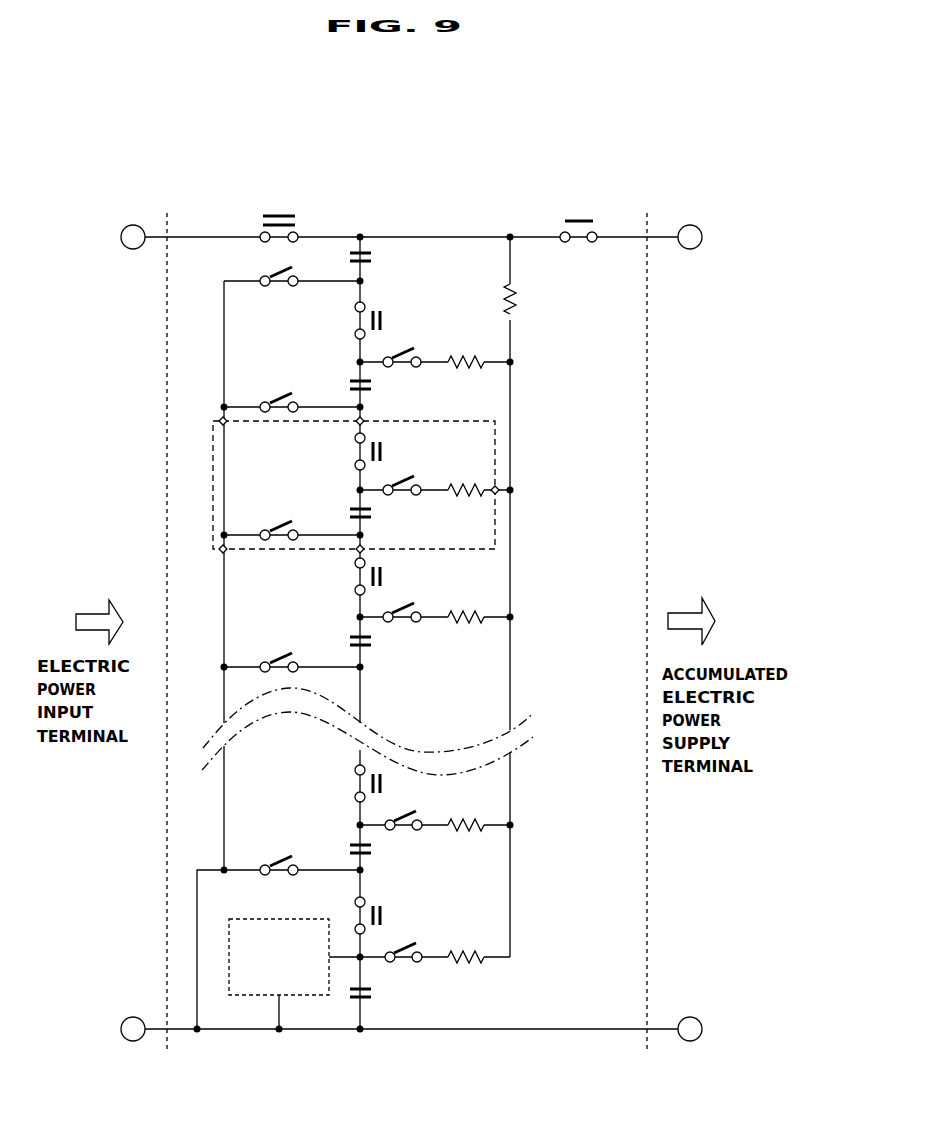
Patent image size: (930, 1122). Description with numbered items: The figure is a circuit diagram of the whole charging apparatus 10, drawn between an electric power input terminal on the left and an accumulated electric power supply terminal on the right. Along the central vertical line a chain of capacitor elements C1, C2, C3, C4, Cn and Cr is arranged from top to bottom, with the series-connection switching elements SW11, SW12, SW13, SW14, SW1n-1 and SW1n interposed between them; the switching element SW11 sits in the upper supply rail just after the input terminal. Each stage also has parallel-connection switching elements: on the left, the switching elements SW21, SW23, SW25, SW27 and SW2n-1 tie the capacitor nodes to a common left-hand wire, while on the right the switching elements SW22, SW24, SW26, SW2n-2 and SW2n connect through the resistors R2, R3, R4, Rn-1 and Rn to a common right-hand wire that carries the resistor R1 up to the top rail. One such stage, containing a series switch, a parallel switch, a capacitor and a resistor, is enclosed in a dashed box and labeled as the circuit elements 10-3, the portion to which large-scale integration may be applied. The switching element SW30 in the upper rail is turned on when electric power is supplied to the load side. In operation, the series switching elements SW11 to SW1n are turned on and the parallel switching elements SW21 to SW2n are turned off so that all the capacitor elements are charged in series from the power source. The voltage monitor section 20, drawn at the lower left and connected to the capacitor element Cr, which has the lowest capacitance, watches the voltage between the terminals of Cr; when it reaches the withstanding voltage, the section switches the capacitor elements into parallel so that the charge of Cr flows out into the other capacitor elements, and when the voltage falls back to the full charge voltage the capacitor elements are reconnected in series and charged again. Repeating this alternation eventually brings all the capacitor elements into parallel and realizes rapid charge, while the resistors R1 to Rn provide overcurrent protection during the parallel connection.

The charging apparatus 10 is at (420, 146).
The circuit elements 10-3 is at (497, 423).
The voltage monitor section 20 is at (294, 974).
The switching element SW11 is at (281, 210).
The switching element SW30 is at (576, 214).
The switching element SW12 is at (383, 307).
The switching element SW13 is at (356, 446).
The switching element SW14 is at (356, 571).
The switching element SW1n-1 is at (356, 780).
The switching element SW1n is at (356, 905).
The switching element SW21 is at (278, 287).
The switching element SW22 is at (400, 368).
The switching element SW23 is at (276, 398).
The switching element SW24 is at (400, 483).
The switching element SW25 is at (275, 525).
The switching element SW26 is at (400, 610).
The switching element SW27 is at (275, 657).
The switching element SW2n-1 is at (275, 860).
The switching element SW2n-2 is at (400, 832).
The switching element SW2n is at (405, 947).
The capacitor element C1 is at (374, 260).
The capacitor element C2 is at (343, 388).
The capacitor element C3 is at (343, 518).
The capacitor element C4 is at (341, 641).
The capacitor element Cn is at (344, 849).
The capacitor element Cr is at (376, 993).
The resistor R1 is at (523, 299).
The resistor R2 is at (466, 351).
The resistor R3 is at (466, 503).
The resistor R4 is at (466, 629).
The resistor Rn-1 is at (467, 836).
The resistor Rn is at (466, 970).